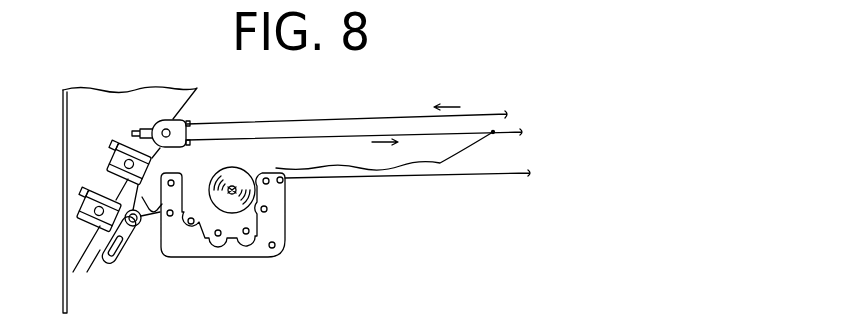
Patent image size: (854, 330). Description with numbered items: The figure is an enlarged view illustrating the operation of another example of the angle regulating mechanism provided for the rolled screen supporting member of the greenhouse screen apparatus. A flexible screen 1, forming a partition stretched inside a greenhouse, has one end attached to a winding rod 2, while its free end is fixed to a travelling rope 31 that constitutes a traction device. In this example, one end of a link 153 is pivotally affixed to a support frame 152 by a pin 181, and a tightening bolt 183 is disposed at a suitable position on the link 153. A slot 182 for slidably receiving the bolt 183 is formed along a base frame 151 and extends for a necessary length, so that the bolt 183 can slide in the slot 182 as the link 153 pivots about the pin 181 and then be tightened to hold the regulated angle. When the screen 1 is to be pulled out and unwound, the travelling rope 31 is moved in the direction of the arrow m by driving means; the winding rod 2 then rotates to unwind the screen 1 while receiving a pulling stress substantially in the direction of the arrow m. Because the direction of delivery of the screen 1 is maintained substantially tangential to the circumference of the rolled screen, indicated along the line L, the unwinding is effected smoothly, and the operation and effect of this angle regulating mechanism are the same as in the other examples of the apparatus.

The flexible screen 1 is at (333, 170).
The winding rod 2 is at (236, 187).
The travelling rope 31 is at (362, 122).
The base frame 151 is at (106, 264).
The support frame 152 is at (283, 227).
The link 153 is at (148, 250).
The pin 181 is at (184, 212).
The slot 182 is at (120, 250).
The tightening bolt 183 is at (138, 250).
The arrow m is at (394, 142).
The line L is at (380, 180).